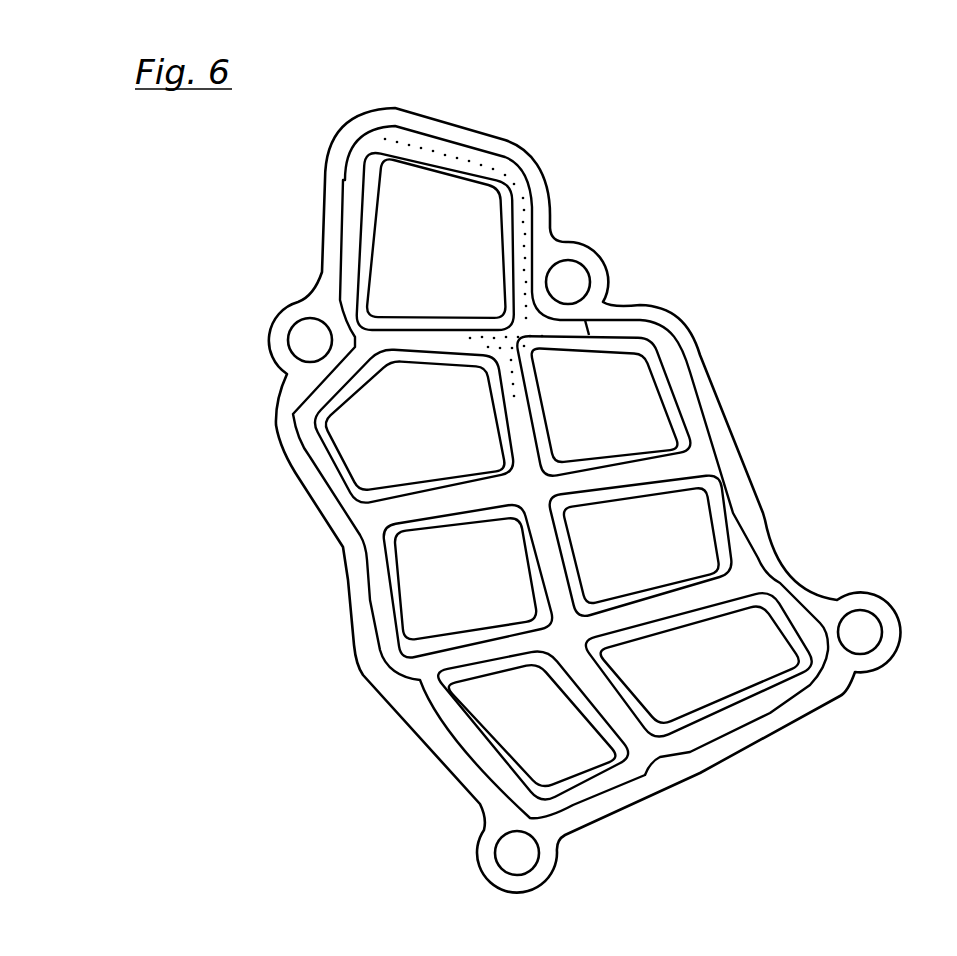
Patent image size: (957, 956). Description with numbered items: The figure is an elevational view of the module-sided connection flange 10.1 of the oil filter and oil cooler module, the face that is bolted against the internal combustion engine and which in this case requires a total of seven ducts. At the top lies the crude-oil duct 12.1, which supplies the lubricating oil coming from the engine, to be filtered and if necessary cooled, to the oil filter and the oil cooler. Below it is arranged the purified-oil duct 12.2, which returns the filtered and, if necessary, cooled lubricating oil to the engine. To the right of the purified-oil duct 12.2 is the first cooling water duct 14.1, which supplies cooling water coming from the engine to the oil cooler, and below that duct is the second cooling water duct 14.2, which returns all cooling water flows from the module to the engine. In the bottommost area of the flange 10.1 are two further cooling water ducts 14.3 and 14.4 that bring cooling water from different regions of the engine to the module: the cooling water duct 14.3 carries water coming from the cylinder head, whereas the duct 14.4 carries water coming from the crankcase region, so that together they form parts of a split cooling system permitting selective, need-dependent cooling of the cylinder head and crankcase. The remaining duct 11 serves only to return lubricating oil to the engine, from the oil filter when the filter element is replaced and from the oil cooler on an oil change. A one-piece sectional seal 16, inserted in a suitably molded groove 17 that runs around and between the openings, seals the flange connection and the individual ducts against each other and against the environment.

The module-sided connection flange 10.1 is at (700, 118).
The duct 11 is at (420, 603).
The crude-oil duct 12.1 is at (385, 267).
The purified-oil duct 12.2 is at (385, 468).
The first cooling water duct 14.1 is at (625, 383).
The second cooling water duct 14.2 is at (703, 545).
The cooling water duct 14.3 is at (480, 700).
The cooling water duct 14.4 is at (733, 672).
The one-piece sectional seal 16 is at (472, 158).
The groove 17 is at (645, 333).